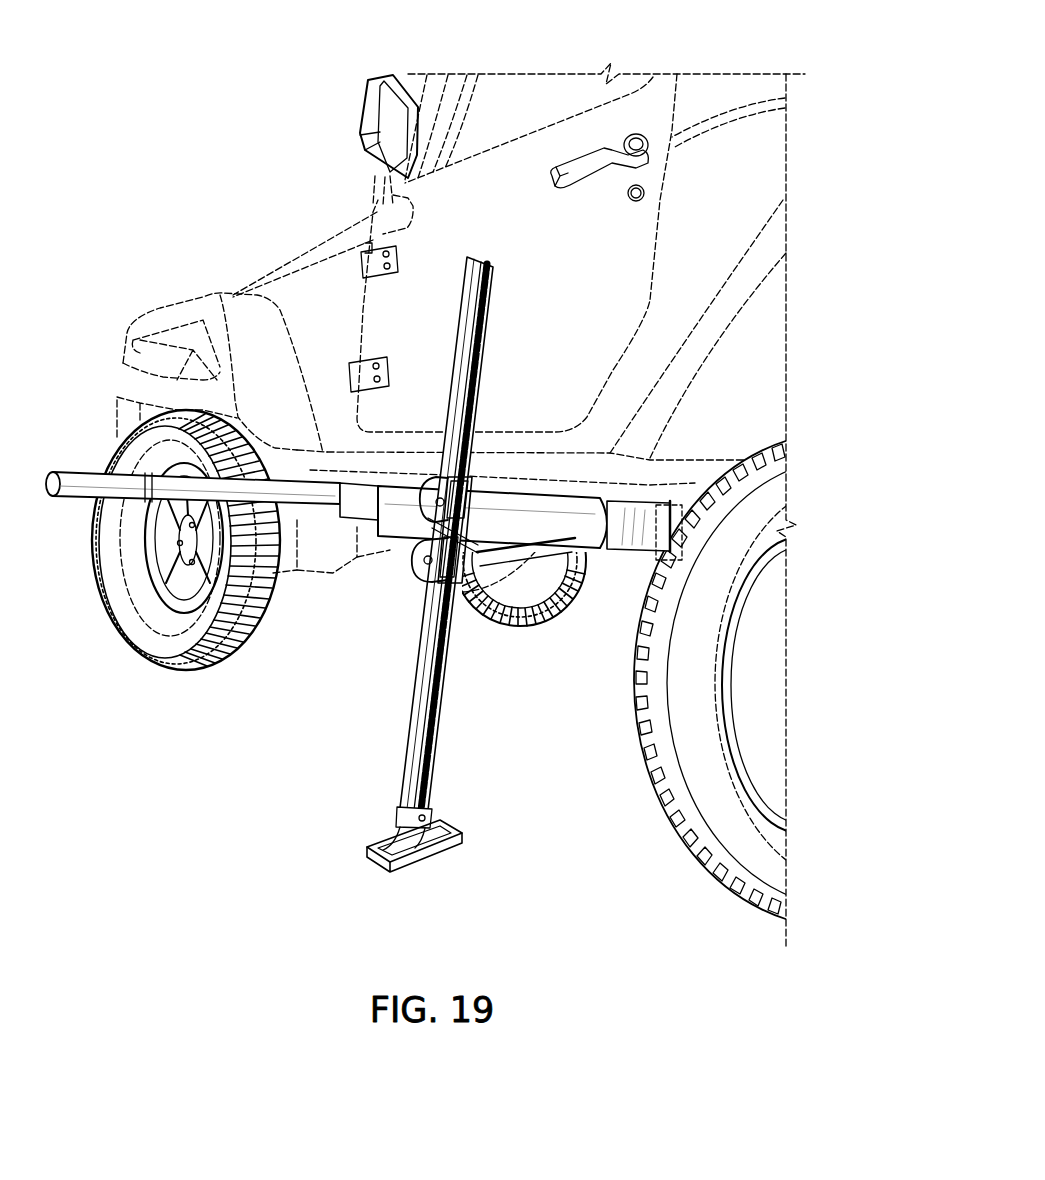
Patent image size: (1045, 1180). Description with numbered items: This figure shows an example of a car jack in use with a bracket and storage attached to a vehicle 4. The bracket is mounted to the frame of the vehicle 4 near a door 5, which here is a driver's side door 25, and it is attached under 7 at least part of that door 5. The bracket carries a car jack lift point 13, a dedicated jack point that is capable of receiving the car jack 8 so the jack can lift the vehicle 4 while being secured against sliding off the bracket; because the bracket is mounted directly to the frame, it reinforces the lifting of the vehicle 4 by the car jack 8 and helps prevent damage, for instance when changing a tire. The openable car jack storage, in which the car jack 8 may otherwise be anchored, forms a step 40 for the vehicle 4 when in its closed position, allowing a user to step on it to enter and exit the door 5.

The vehicle 4 is at (740, 98).
The door 5 is at (484, 192).
The driver's side door 25 is at (625, 250).
The under at least part of the door 7 is at (567, 476).
The step 40 is at (580, 527).
The car jack 8 is at (420, 697).
The car jack lift point 13 is at (480, 587).